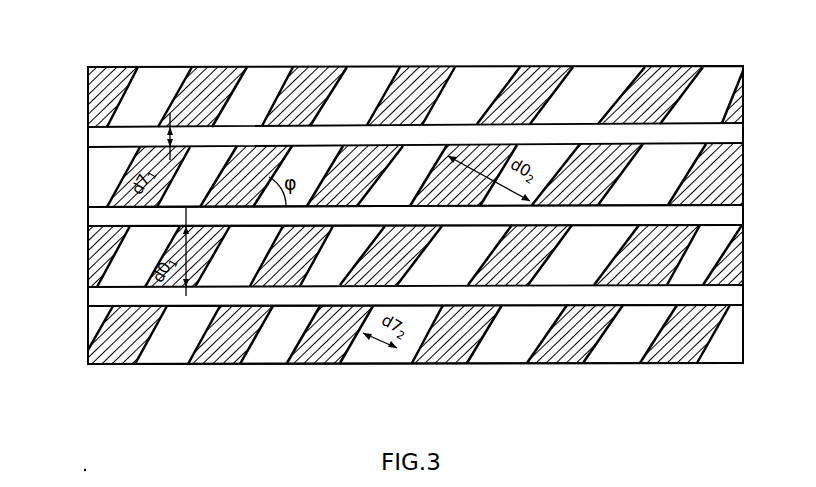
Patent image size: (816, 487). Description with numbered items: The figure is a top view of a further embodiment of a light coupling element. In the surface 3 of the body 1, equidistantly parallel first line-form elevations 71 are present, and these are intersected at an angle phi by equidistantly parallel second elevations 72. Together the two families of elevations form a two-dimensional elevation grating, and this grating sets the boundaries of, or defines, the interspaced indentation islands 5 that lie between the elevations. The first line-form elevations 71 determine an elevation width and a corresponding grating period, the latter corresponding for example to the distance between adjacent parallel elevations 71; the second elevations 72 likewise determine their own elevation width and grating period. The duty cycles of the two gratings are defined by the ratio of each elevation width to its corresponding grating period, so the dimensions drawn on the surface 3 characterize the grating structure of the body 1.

The body 1 is at (387, 56).
The surface 3 is at (262, 82).
The indentation islands 5 is at (535, 111).
The first line-form elevations 71 is at (120, 213).
The second elevations 72 is at (272, 345).